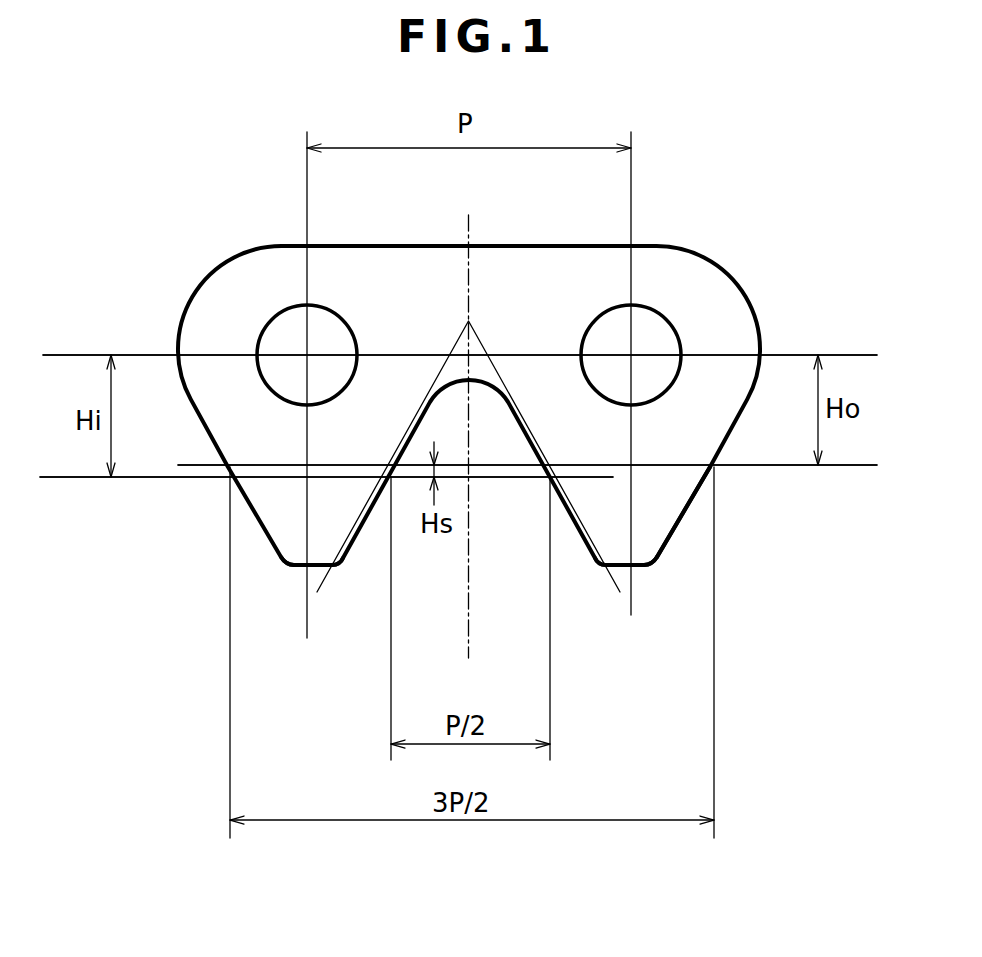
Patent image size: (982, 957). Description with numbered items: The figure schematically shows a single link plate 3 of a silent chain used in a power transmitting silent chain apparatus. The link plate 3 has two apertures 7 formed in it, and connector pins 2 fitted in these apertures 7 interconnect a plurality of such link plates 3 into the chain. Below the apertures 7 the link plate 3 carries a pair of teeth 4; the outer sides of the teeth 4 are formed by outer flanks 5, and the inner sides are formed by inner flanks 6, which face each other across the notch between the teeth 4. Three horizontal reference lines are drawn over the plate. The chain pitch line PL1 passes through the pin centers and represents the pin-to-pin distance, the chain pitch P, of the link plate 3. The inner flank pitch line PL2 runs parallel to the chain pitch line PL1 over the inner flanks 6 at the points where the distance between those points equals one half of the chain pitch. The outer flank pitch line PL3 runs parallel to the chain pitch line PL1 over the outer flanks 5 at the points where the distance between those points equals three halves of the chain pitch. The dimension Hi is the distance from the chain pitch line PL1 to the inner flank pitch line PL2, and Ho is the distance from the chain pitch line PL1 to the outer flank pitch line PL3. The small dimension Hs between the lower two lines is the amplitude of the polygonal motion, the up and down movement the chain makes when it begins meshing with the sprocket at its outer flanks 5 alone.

The connector pin 2 is at (648, 320).
The link plate 3 is at (718, 300).
The teeth 4 is at (293, 533).
The outer flank 5 is at (688, 512).
The inner flank 6 is at (363, 530).
The aperture 7 is at (266, 338).
The chain pitch line PL1 is at (390, 353).
The inner flank pitch line PL2 is at (277, 480).
The outer flank pitch line PL3 is at (677, 465).